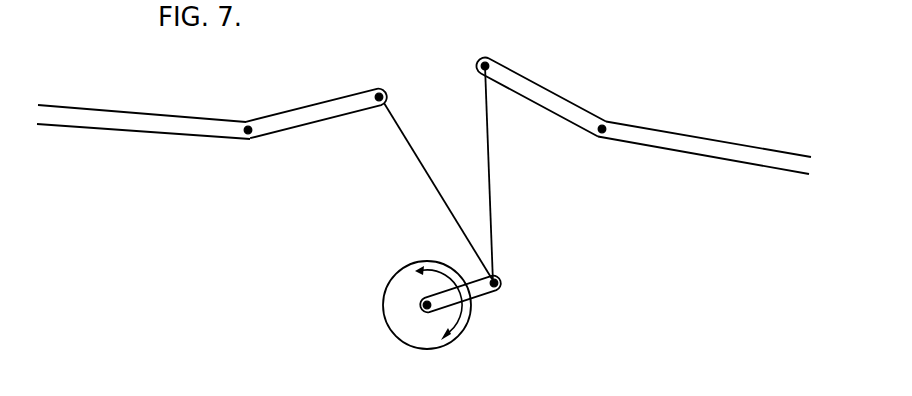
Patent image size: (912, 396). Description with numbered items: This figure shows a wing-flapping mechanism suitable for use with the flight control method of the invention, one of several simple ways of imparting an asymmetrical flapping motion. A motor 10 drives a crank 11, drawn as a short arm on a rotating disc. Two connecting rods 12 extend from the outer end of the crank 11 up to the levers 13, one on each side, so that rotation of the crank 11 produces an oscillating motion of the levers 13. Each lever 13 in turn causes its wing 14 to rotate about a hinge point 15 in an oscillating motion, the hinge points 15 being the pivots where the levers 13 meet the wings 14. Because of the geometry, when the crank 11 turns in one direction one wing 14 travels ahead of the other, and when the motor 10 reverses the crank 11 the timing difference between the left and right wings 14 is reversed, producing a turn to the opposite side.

The motor 10 is at (394, 336).
The crank 11 is at (484, 296).
The connecting rods 12 is at (420, 168).
The levers 13 is at (321, 102).
The wings 14 is at (158, 114).
The hinge points 15 is at (248, 141).